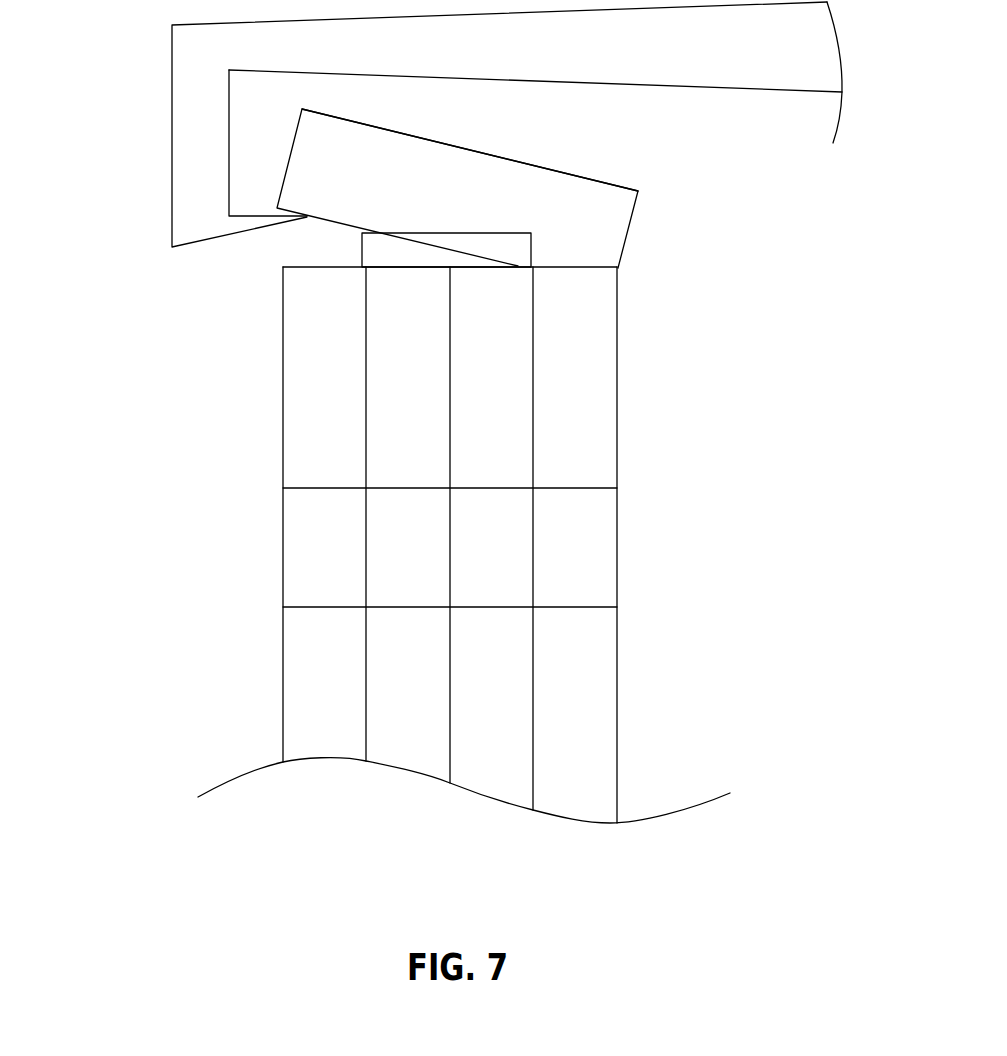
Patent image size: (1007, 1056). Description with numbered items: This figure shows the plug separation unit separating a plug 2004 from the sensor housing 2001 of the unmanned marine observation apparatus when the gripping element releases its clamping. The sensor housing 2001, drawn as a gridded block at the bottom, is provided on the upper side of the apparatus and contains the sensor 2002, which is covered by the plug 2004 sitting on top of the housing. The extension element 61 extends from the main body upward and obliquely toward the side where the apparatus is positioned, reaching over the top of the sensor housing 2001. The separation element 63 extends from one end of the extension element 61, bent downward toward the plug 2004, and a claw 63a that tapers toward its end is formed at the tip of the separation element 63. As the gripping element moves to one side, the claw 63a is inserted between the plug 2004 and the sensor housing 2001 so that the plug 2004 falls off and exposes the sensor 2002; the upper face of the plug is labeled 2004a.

The separation element 63 is at (441, 124).
The extension element 61 is at (535, 97).
The claw 63a is at (236, 243).
The plug 2004 is at (557, 188).
The upper surface of elastic member 2004a is at (470, 142).
The sensor 2002 is at (576, 310).
The sensor housing 2001 is at (500, 545).